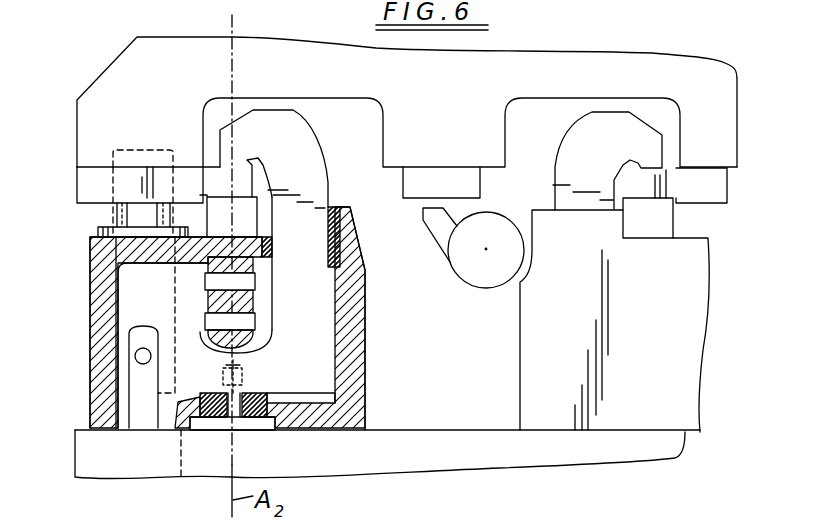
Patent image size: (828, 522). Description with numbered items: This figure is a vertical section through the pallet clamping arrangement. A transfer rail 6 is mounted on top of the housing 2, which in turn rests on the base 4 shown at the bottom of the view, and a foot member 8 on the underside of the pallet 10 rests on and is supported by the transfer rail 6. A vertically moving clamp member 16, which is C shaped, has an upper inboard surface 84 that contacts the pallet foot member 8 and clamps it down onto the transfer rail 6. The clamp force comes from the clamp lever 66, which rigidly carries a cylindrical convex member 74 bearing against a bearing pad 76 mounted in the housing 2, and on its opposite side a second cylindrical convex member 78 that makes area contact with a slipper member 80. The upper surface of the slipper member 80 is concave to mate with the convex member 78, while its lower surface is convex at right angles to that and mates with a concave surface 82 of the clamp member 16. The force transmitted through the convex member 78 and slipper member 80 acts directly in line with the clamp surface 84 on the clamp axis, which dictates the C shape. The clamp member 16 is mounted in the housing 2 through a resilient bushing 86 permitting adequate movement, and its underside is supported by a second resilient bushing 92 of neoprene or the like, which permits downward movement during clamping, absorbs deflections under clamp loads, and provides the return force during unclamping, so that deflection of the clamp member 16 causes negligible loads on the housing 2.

The housing 2 is at (358, 387).
The base plate 4 is at (673, 447).
The transfer rail 6 is at (250, 223).
The foot member 8 is at (85, 186).
The pallet 10 is at (93, 80).
The clamp member 16 is at (334, 186).
The clamp lever 66 is at (242, 300).
The cylindrical convex member 74 is at (208, 281).
The bearing pad 76 is at (208, 272).
The second cylindrical convex member 78 is at (218, 323).
The slipper member 80 is at (260, 342).
The concave surface 82 is at (212, 352).
The upper inboard surface 84 is at (233, 167).
The resilient bushing 86 is at (337, 202).
The resilient bushing 92 is at (253, 395).